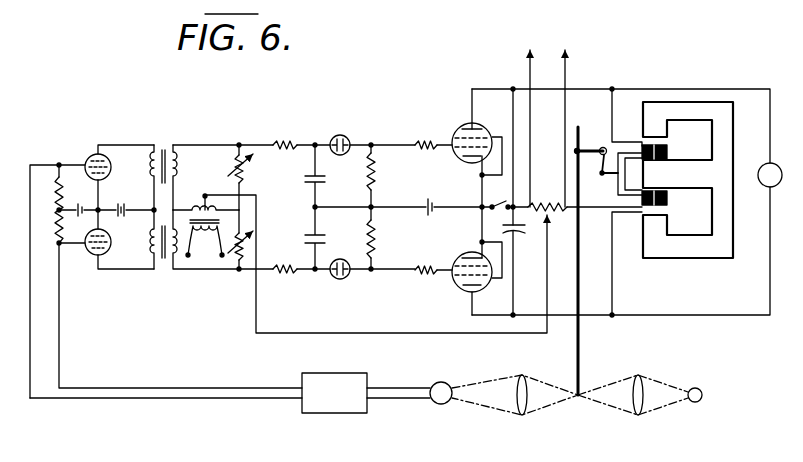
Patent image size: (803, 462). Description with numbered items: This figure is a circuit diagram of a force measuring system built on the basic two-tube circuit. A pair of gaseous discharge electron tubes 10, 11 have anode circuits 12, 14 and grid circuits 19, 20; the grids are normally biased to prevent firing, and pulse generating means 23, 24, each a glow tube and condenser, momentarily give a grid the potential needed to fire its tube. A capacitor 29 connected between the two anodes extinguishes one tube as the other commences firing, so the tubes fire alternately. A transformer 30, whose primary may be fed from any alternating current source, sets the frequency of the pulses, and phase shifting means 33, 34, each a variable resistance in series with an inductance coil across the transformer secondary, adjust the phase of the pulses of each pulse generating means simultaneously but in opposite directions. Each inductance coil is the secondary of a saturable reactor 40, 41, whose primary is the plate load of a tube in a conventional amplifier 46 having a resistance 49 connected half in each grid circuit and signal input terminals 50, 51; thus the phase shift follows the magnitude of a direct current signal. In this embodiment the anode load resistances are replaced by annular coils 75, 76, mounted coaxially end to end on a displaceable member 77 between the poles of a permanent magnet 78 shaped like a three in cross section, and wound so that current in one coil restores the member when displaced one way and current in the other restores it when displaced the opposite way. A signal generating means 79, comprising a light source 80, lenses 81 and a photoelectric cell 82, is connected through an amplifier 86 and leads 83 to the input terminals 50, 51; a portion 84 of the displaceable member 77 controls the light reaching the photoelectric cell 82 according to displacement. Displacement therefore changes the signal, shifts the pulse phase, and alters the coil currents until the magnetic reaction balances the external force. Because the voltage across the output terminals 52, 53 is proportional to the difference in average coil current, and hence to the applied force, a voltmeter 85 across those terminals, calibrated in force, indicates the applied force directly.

The electron tube 10 is at (460, 128).
The electron tube 11 is at (457, 290).
The anode circuit 12 is at (579, 86).
The anode circuit 14 is at (591, 309).
The grid circuit 19 is at (380, 153).
The grid circuit 20 is at (380, 265).
The pulse generating means 23 is at (327, 136).
The pulse generating means 24 is at (322, 277).
The capacitor 29 is at (516, 234).
The transformer 30 is at (203, 227).
The phase shifting means 33 is at (211, 140).
The phase shifting means 34 is at (205, 282).
The saturable reactor 40 is at (166, 140).
The saturable reactor 41 is at (168, 282).
The amplifier 46 is at (120, 282).
The resistance 49 is at (55, 226).
The signal input terminal 50 is at (30, 165).
The signal input terminal 51 is at (60, 245).
The output terminal 52 is at (612, 89).
The output terminal 53 is at (613, 316).
The coil 75 is at (660, 148).
The coil 76 is at (660, 201).
The displaceable member 77 is at (600, 181).
The permanent magnet 78 is at (712, 248).
The signal generating means 79 is at (571, 408).
The light source 80 is at (697, 388).
The lenses 81 is at (520, 376).
The photoelectric cell 82 is at (446, 405).
The leads 83 is at (268, 392).
The portion 84 is at (577, 382).
The voltmeter 85 is at (765, 163).
The amplifier 86 is at (342, 406).